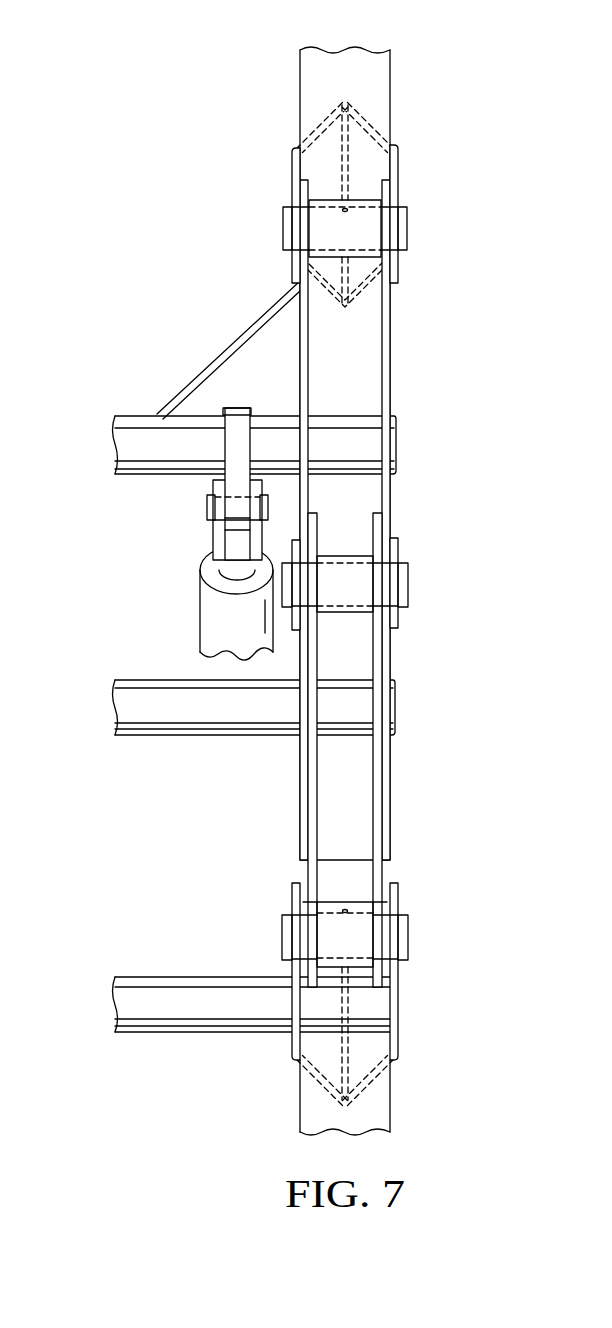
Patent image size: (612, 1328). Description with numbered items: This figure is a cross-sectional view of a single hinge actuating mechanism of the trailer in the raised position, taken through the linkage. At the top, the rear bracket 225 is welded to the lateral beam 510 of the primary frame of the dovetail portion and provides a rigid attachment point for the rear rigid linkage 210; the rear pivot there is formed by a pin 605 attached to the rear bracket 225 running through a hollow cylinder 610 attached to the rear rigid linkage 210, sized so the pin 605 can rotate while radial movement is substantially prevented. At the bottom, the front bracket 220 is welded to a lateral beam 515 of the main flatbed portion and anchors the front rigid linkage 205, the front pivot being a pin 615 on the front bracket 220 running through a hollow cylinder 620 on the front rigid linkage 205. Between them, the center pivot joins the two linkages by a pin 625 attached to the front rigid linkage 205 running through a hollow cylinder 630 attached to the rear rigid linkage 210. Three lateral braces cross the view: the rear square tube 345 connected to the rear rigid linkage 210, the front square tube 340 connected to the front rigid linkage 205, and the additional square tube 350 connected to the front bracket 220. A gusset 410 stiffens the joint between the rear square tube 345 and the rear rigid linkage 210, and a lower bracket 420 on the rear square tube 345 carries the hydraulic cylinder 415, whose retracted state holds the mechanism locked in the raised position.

The front rigid linkage 205 is at (313, 780).
The rear rigid linkage 210 is at (299, 313).
The front bracket 220 is at (293, 1045).
The rear bracket 225 is at (293, 163).
The front square tube 340 is at (186, 737).
The rear square tube 345 is at (327, 416).
The additional square tube 350 is at (186, 1033).
The gusset 410 is at (190, 378).
The hydraulic cylinder 415 is at (200, 598).
The lower bracket 420 is at (237, 407).
The lateral beam 510 is at (390, 81).
The lateral beam 515 is at (390, 1103).
The pin 605 is at (408, 227).
The hollow cylinder 610 is at (355, 198).
The pin 615 is at (408, 940).
The hollow cylinder 620 is at (353, 967).
The pin 625 is at (408, 586).
The hollow cylinder 630 is at (360, 553).